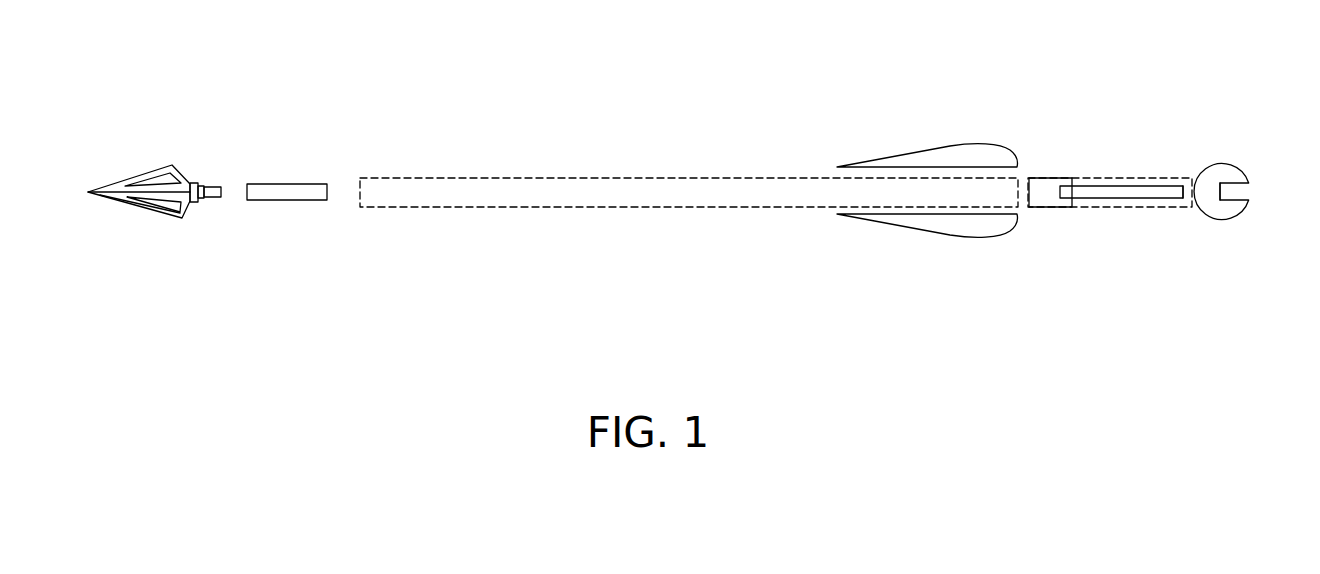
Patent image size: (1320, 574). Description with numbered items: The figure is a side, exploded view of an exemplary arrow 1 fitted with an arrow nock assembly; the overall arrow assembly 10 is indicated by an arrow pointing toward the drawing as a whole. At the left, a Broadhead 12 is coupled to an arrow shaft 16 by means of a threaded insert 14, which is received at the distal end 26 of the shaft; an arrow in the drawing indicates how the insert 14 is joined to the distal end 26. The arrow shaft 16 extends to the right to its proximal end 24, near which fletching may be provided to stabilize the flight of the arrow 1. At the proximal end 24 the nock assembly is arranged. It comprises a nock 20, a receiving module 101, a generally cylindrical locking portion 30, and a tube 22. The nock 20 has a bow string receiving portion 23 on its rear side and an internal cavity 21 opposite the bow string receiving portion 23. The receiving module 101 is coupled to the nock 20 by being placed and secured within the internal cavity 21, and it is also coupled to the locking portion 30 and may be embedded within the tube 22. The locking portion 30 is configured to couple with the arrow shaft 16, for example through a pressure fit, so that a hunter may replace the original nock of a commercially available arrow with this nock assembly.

The arrow 1 is at (220, 346).
The arrow assembly 10 is at (1074, 63).
The Broadhead 12 is at (170, 217).
The threaded insert 14 is at (288, 201).
The arrow shaft 16 is at (647, 206).
The nock 20 is at (1218, 162).
The internal cavity 21 is at (1172, 198).
The tube 22 is at (1122, 177).
The bow string receiving portion 23 is at (1242, 192).
The proximal end 24 is at (1046, 155).
The distal end 26 is at (352, 181).
The locking portion 30 is at (1052, 208).
The receiving module 101 is at (1112, 198).